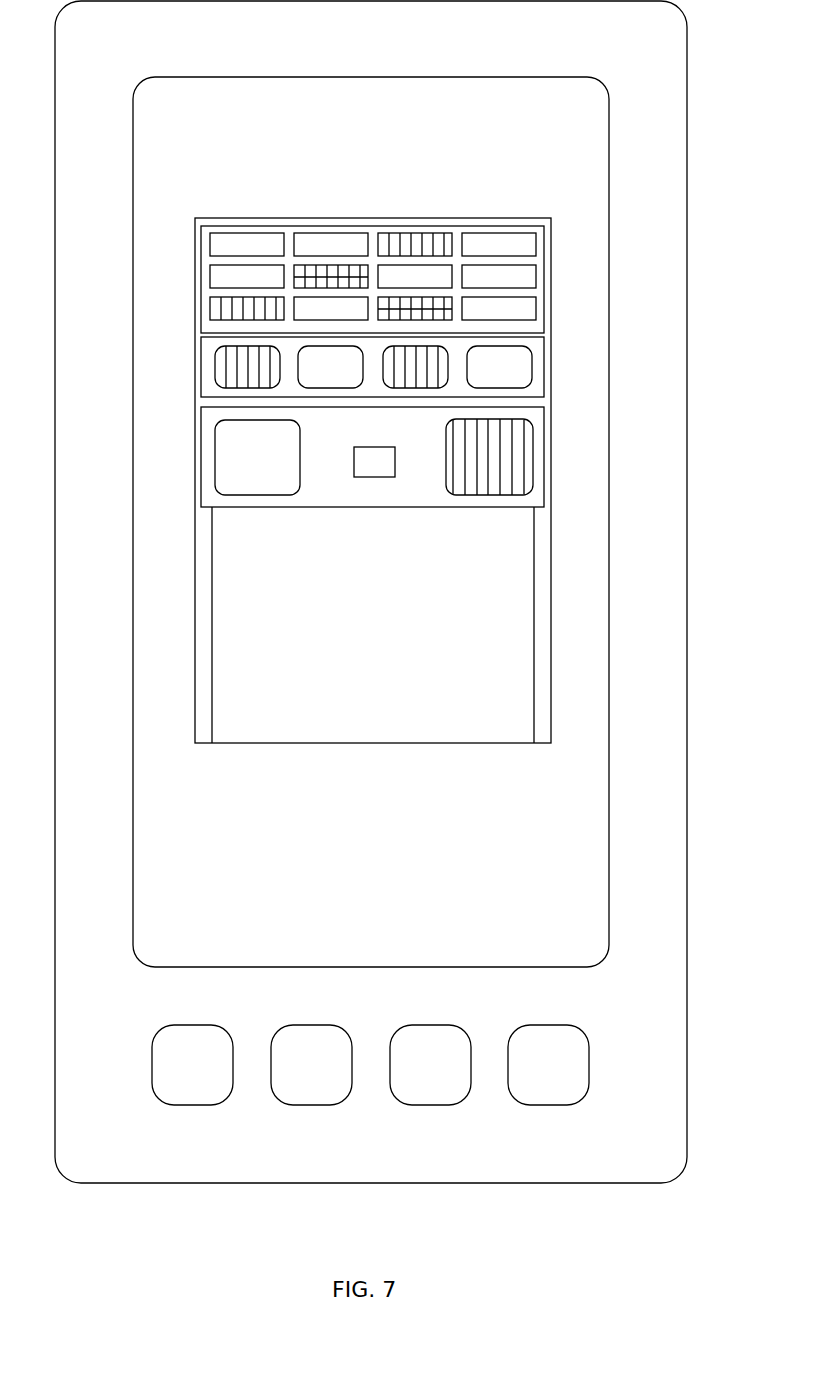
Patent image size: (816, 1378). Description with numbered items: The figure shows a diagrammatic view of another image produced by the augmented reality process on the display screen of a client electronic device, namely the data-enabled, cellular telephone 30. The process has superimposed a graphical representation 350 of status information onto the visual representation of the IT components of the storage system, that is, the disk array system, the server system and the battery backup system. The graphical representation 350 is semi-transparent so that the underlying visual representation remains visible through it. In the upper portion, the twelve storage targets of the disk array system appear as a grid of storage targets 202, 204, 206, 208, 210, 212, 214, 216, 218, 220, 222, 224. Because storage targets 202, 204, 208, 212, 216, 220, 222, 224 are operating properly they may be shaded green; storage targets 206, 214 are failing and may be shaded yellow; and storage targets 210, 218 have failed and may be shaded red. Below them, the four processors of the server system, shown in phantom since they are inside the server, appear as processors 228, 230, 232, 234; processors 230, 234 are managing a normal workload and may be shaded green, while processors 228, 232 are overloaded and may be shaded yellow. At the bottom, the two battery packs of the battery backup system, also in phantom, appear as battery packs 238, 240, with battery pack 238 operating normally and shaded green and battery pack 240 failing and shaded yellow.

The data-enabled, cellular telephone 30 is at (688, 70).
The graphical representation 350 is at (551, 332).
The storage target 202 is at (247, 244).
The storage target 204 is at (247, 276).
The storage target 206 is at (247, 308).
The storage target 208 is at (331, 244).
The storage target 210 is at (331, 276).
The storage target 212 is at (331, 308).
The storage target 214 is at (415, 244).
The storage target 216 is at (415, 276).
The storage target 218 is at (415, 308).
The storage target 220 is at (499, 244).
The storage target 222 is at (499, 276).
The storage target 224 is at (499, 308).
The processor 228 is at (247, 367).
The processor 230 is at (330, 367).
The processor 232 is at (415, 367).
The processor 234 is at (499, 367).
The battery pack 238 is at (257, 457).
The battery pack 240 is at (489, 457).